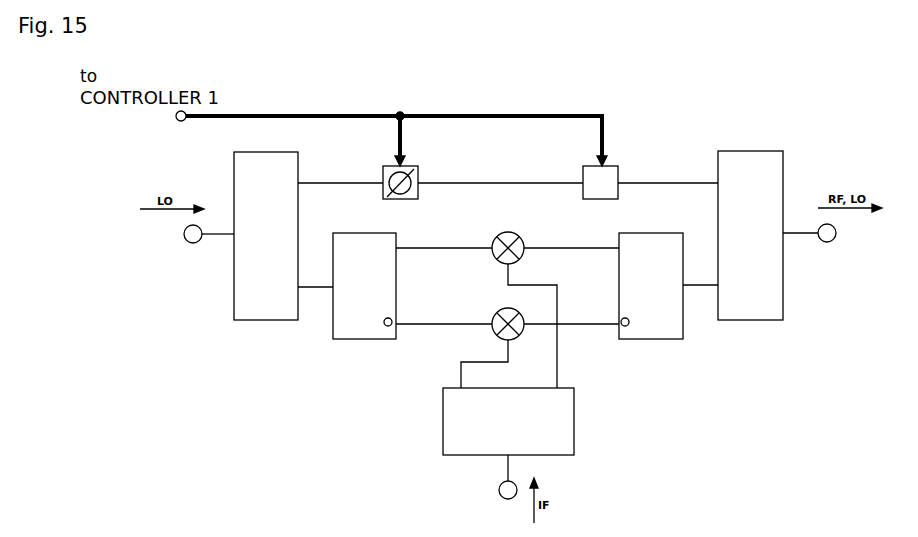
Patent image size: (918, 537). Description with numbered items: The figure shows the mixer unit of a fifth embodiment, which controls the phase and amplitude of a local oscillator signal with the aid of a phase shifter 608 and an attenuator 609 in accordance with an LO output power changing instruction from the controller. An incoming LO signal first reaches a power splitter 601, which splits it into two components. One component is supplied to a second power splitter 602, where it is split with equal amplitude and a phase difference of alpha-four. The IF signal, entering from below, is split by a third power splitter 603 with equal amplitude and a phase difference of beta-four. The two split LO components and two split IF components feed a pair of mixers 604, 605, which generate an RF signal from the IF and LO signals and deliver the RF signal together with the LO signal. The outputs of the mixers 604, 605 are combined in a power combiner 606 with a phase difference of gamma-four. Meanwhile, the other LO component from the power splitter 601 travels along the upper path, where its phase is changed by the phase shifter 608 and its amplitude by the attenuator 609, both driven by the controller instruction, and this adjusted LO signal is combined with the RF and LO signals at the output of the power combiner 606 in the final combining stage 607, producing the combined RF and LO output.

The power splitter 601 is at (258, 320).
The power splitter 602 is at (350, 339).
The power splitter 603 is at (574, 441).
The mixer 604 is at (505, 232).
The mixer 605 is at (504, 309).
The power combiner 606 is at (665, 339).
The phase shifter 607 is at (765, 320).
The phase shifter 608 is at (413, 166).
The attenuator 609 is at (616, 166).